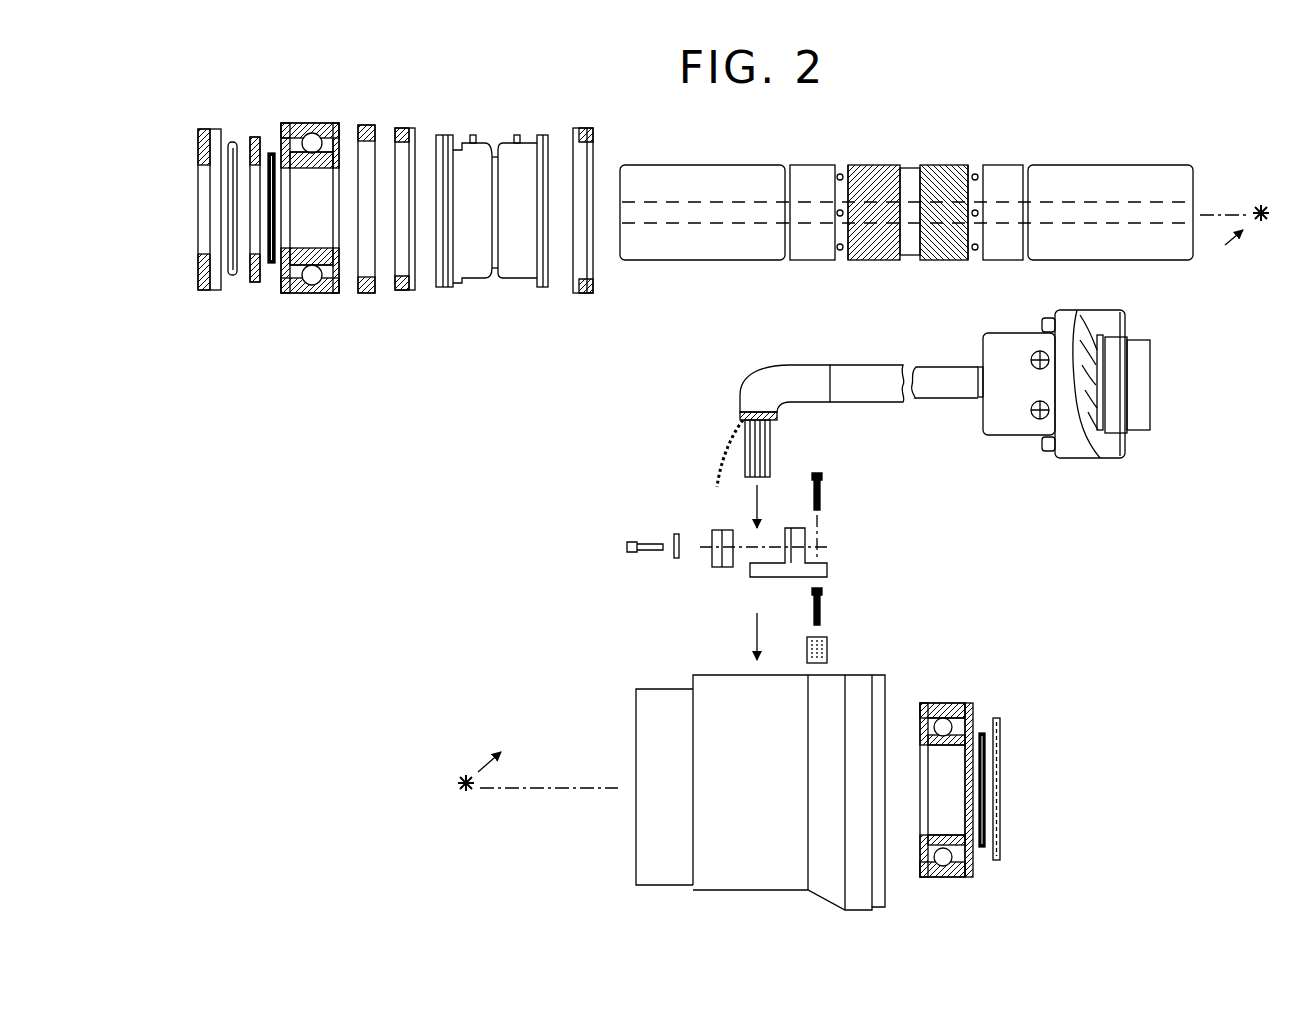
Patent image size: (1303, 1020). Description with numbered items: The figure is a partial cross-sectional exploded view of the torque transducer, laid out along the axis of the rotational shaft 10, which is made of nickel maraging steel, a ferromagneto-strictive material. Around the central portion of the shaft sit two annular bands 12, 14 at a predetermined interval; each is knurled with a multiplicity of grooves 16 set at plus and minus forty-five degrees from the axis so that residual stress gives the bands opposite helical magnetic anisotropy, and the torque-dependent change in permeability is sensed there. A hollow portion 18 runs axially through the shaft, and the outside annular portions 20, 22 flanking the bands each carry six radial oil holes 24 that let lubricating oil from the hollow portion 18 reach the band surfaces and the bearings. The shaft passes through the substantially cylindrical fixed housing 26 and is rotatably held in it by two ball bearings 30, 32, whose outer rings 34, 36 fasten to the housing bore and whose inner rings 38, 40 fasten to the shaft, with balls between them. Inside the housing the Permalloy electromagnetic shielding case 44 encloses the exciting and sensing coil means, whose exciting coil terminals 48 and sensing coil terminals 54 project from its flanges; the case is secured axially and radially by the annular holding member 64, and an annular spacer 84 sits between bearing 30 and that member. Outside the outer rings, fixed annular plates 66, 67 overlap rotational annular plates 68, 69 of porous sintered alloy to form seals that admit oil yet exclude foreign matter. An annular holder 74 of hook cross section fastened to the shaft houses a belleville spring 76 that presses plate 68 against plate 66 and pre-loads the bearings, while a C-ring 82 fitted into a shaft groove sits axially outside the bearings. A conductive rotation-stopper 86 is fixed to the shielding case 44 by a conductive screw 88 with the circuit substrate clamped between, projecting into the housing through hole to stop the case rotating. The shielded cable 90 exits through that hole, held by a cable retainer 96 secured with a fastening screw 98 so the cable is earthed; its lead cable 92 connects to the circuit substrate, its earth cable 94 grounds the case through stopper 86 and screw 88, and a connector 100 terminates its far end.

The rotational shaft 10 is at (944, 211).
The annular band 12 is at (882, 256).
The annular band 14 is at (947, 256).
The grooves 16 is at (855, 172).
The hollow portion 18 is at (1132, 215).
The annular portion 20 is at (832, 235).
The annular portion 22 is at (985, 240).
The oil holes 24 is at (836, 210).
The fixed housing 26 is at (726, 688).
The ball bearing 30 is at (320, 220).
The ball bearing 32 is at (999, 752).
The outer ring 34 is at (310, 296).
The outer ring 36 is at (944, 710).
The inner ring 38 is at (335, 157).
The inner ring 40 is at (945, 745).
The electromagnetic shielding case 44 is at (496, 221).
The exciting coil terminals 48 is at (520, 135).
The sensing coil terminals 54 is at (475, 135).
The annular holding member 64 is at (410, 130).
The fixed annular plate 66 is at (288, 134).
The fixed annular plate 67 is at (972, 730).
The rotational annular plate 68 is at (255, 284).
The rotational annular plate 69 is at (1001, 723).
The annular holder 74 is at (211, 287).
The belleville spring 76 is at (233, 277).
The C-ring 82 is at (272, 265).
The annular spacer 84 is at (370, 130).
The rotation-stopper 86 is at (828, 650).
The screw 88 is at (822, 600).
The shielded cable 90 is at (814, 426).
The lead cable 92 is at (768, 447).
The earth cable 94 is at (724, 458).
The cable retainer 96 is at (712, 562).
The fastening screw 98 is at (643, 542).
The connector 100 is at (1020, 415).